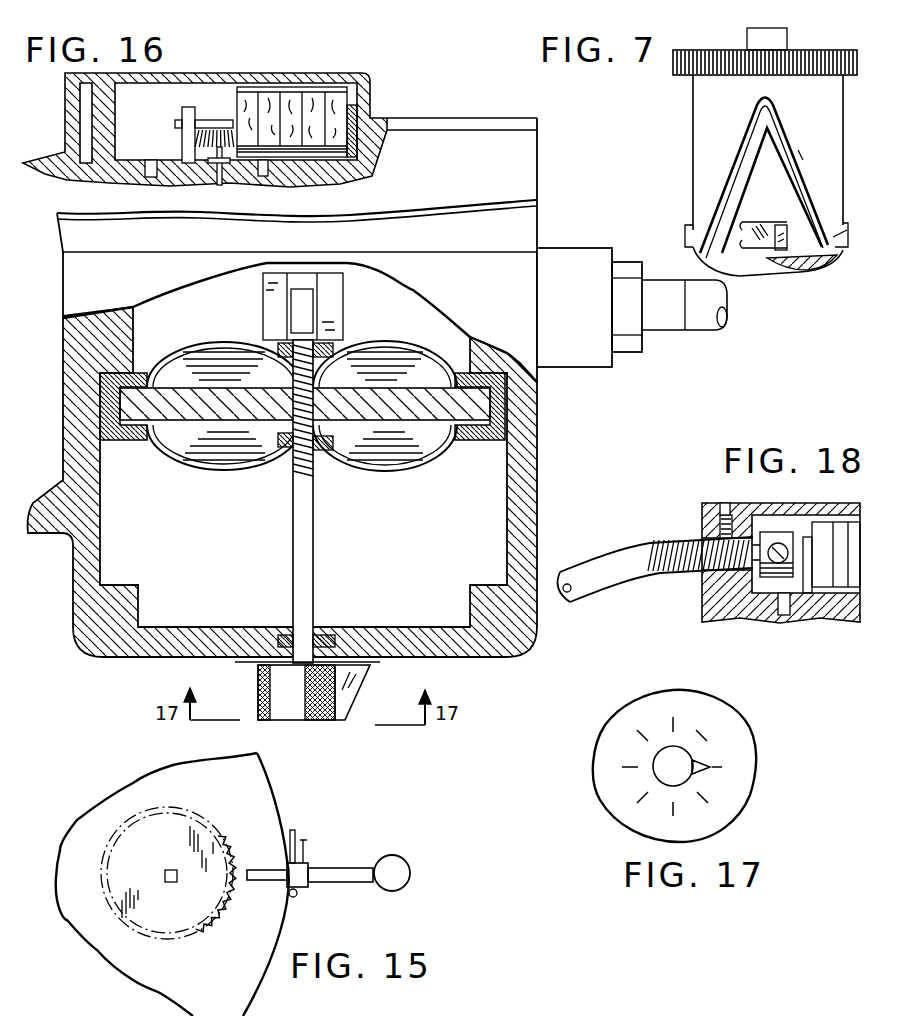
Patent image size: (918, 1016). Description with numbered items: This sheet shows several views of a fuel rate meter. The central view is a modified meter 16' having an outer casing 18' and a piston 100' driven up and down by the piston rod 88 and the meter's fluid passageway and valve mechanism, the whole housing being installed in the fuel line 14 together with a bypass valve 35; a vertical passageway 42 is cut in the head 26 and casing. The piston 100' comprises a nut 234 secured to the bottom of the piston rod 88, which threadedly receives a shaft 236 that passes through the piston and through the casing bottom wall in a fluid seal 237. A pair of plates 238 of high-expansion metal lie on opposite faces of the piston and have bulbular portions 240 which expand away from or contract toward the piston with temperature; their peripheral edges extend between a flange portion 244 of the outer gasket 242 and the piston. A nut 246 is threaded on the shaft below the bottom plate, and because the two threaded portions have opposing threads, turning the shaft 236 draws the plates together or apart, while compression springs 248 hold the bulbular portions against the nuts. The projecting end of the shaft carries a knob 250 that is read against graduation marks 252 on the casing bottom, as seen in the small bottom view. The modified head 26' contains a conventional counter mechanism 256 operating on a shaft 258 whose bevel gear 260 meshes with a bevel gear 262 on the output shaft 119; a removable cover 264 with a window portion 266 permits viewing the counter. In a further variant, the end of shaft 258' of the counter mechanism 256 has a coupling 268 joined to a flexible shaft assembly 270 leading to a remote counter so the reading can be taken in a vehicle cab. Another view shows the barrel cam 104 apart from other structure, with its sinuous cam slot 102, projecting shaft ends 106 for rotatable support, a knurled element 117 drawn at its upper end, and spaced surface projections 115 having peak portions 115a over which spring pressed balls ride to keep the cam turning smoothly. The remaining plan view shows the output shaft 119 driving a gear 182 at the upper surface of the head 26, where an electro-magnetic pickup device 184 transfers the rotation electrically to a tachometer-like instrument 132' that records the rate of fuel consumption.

In FIG. 16, the fuel line 14 is at (698, 315).
In FIG. 16, the modified meter 16' is at (69, 674).
In FIG. 17, the modified meter 16' is at (666, 766).
In FIG. 16, the outer casing 18' is at (301, 460).
In FIG. 15, the head 26 is at (172, 884).
In FIG. 16, the modified head 26' is at (298, 227).
In FIG. 18, the modified head 26' is at (763, 563).
In FIG. 16, the bypass valve 35 is at (43, 520).
In FIG. 15, the vertical passageway 42 is at (355, 1010).
In FIG. 16, the piston rod 88 is at (345, 305).
In FIG. 16, the piston 100' is at (256, 404).
In FIG. 7, the cam slot 102 is at (737, 172).
In FIG. 7, the barrel cam 104 is at (702, 197).
In FIG. 7, the shaft ends 106 is at (750, 38).
In FIG. 7, the surface projections 115 is at (790, 256).
In FIG. 7, the peak portions 115a is at (779, 226).
In FIG. 7, the knurled cap 117 is at (672, 75).
In FIG. 16, the output shaft 119 is at (219, 183).
In FIG. 15, the output shaft 119 is at (165, 875).
In FIG. 15, the tachometer-like instrument 132' is at (414, 883).
In FIG. 15, the gear 182 is at (237, 841).
In FIG. 15, the electro-magnetic pickup device 184 is at (310, 866).
In FIG. 16, the nut 234 is at (265, 352).
In FIG. 16, the shaft 236 is at (283, 647).
In FIG. 16, the fluid seal 237 is at (336, 646).
In FIG. 16, the plates 238 is at (483, 418).
In FIG. 16, the bulbular portions 240 is at (158, 368).
In FIG. 16, the outer gasket 242 is at (503, 432).
In FIG. 16, the flange portion 244 is at (513, 467).
In FIG. 16, the nut 246 is at (309, 470).
In FIG. 16, the compression springs 248 is at (322, 377).
In FIG. 16, the knob 250 is at (301, 705).
In FIG. 17, the knob 250 is at (663, 773).
In FIG. 17, the graduation marks 252 is at (720, 767).
In FIG. 16, the counter mechanism 256 is at (337, 93).
In FIG. 18, the counter mechanism 256 is at (846, 578).
In FIG. 16, the shaft 258 is at (160, 126).
In FIG. 18, the counter shaft 258' is at (793, 536).
In FIG. 16, the bevel gear 260 is at (229, 117).
In FIG. 16, the bevel gear 262 is at (205, 130).
In FIG. 16, the removable cover 264 is at (466, 125).
In FIG. 16, the window portion 266 is at (265, 76).
In FIG. 18, the coupling 268 is at (772, 532).
In FIG. 18, the flexible shaft assembly 270 is at (636, 553).